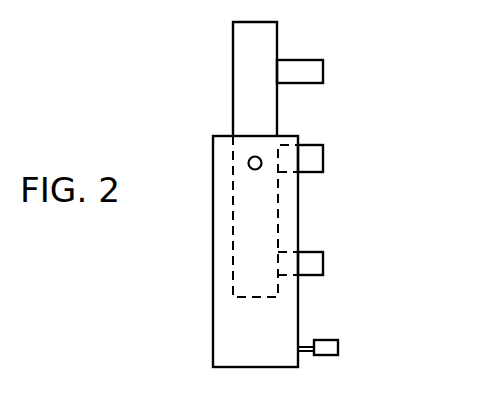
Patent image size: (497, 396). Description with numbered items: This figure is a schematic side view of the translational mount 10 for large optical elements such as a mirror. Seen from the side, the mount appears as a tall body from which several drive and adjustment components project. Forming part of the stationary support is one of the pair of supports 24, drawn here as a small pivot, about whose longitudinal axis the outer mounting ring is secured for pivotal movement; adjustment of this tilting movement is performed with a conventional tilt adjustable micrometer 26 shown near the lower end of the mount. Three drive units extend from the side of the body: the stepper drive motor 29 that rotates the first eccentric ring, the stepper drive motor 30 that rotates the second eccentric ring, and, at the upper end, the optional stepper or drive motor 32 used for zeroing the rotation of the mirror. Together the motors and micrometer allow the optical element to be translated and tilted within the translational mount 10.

The translational mount 10 is at (173, 82).
The supports 24 is at (255, 156).
The tilt adjustable micrometers 26 is at (338, 348).
The stepper drive motor 29 is at (323, 155).
The stepper drive motor 30 is at (323, 262).
The stepper or drive motor 32 is at (323, 72).